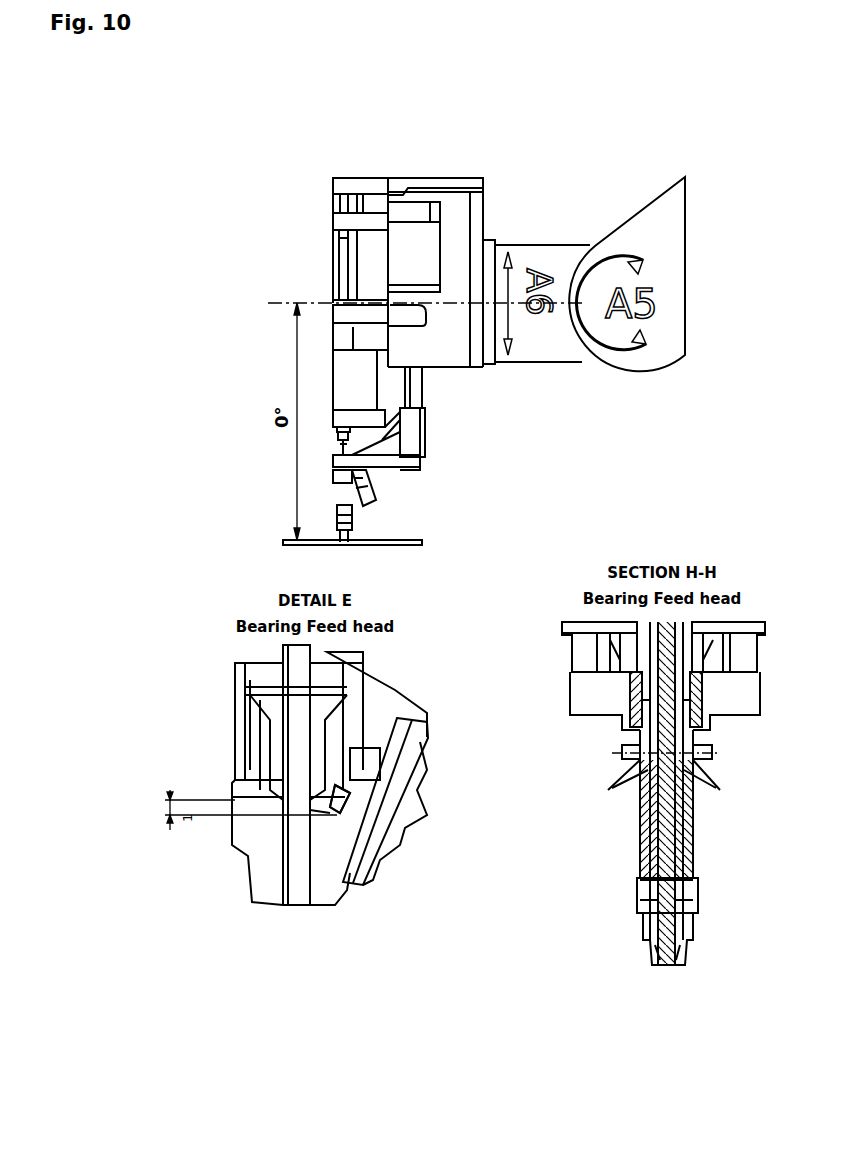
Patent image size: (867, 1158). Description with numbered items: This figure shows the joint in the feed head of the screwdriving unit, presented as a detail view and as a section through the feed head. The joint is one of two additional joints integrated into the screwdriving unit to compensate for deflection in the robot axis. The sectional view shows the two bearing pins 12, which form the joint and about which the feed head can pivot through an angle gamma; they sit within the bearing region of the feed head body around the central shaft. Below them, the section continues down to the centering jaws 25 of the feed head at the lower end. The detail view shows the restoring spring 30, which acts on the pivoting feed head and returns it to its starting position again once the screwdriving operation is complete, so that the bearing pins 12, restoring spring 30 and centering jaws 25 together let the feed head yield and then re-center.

The restoring spring 30 is at (337, 790).
The bearing pins 12 is at (648, 775).
The centering jaws 25 is at (645, 932).